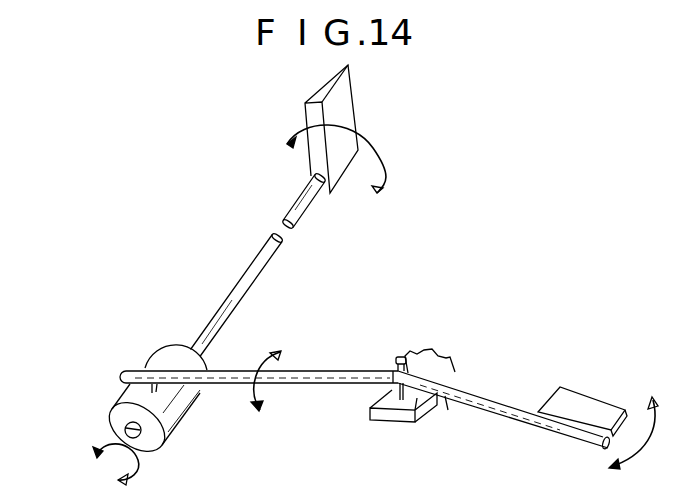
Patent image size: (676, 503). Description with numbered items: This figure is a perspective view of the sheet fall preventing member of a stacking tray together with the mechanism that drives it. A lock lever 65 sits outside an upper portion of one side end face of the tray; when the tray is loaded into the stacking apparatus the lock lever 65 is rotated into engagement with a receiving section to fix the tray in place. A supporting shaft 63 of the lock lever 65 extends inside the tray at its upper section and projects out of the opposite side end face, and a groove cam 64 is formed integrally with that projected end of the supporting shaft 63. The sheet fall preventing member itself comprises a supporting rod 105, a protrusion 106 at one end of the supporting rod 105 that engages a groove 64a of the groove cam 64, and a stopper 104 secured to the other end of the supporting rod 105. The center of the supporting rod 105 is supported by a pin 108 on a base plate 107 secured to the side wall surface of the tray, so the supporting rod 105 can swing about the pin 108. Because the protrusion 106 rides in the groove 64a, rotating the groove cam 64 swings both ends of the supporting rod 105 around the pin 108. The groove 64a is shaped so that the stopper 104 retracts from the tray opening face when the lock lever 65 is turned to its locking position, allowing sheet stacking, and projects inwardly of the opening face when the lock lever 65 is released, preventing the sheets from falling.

The supporting shaft 63 is at (224, 308).
The groove cam 64 is at (122, 393).
The groove 64a is at (128, 392).
The lock lever 65 is at (343, 107).
The stopper 104 is at (580, 410).
The supporting rod 105 is at (297, 385).
The protrusion 106 is at (150, 367).
The base plate 107 is at (410, 400).
The pin 108 is at (393, 383).